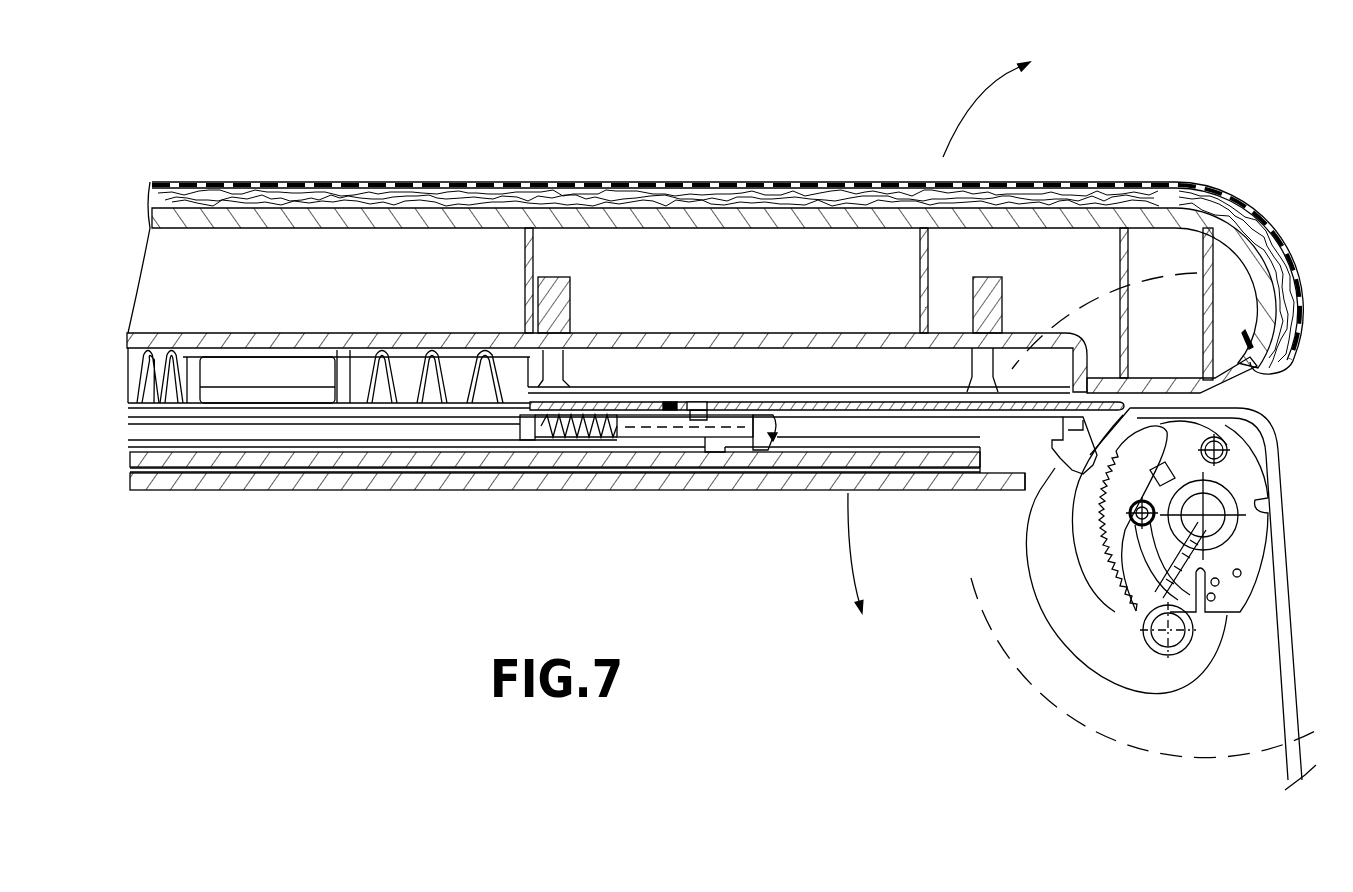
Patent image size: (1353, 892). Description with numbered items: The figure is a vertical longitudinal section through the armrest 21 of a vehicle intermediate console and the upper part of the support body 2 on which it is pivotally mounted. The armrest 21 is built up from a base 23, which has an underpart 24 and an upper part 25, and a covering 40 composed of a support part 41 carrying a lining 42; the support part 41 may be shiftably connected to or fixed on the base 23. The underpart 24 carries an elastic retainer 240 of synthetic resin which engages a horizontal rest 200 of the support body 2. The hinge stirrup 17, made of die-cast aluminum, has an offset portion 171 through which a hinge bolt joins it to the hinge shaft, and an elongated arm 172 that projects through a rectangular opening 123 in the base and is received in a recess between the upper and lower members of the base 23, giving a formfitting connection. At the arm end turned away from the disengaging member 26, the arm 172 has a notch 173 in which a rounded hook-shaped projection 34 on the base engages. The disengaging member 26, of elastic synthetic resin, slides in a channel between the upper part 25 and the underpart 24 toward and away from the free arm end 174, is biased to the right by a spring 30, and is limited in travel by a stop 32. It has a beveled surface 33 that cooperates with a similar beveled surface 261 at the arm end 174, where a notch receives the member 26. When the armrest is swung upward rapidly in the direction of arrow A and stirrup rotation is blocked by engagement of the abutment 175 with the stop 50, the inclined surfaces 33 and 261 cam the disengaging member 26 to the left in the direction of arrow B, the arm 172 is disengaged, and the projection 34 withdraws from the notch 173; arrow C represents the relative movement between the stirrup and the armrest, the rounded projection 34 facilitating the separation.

The support body 2 is at (1283, 668).
The hinge stirrup 17 is at (1077, 670).
The armrest 21 is at (767, 147).
The base 23 is at (355, 464).
The underpart 24 is at (222, 447).
The upper part 25 is at (588, 430).
The disengaging member 26 is at (642, 455).
The spring 30 is at (583, 438).
The stop 32 is at (707, 452).
The beveled surface 33 is at (775, 437).
The projection 34 is at (1060, 415).
The covering 40 is at (448, 180).
The support part 41 is at (283, 217).
The lining 42 is at (642, 335).
The stop 50 is at (1232, 607).
The rectangular opening 123 is at (1017, 365).
The offset portion 171 is at (1052, 600).
The arm 172 is at (940, 430).
The notch 173 is at (1057, 597).
The arm end 174 is at (867, 437).
The abutment 175 is at (1262, 505).
The horizontal rest 200 is at (258, 478).
The retainer 240 is at (1115, 392).
The beveled surface 261 is at (773, 457).
The arrow A is at (980, 108).
The arrow B is at (700, 403).
The arrow C is at (850, 540).